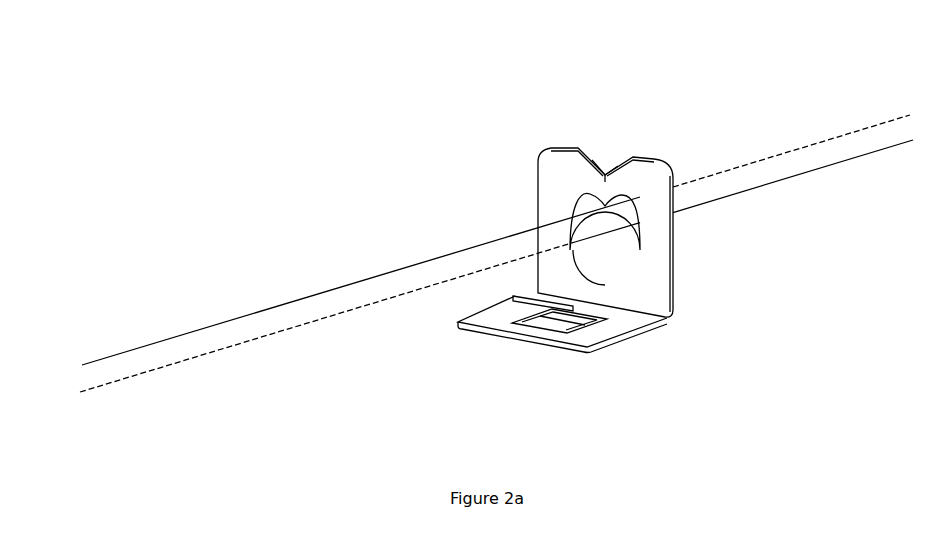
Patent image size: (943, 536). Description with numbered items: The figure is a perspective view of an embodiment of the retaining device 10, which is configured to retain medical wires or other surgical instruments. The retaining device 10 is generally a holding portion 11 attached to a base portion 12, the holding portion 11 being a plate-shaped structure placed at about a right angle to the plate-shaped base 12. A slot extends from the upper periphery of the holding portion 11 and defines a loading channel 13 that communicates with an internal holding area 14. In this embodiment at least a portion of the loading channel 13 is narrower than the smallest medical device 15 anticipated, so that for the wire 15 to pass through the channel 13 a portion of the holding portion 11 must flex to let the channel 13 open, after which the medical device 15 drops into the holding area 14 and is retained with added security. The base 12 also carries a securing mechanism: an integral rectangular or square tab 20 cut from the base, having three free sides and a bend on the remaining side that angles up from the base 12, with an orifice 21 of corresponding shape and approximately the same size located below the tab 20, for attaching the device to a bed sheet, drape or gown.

The retaining device 10 is at (566, 79).
The holding portion 11 is at (653, 227).
The base portion 12 is at (620, 325).
The loading channel 13 is at (605, 172).
The holding area 14 is at (602, 257).
The medical device 15 is at (750, 156).
The tab 20 is at (513, 300).
The orifice 21 is at (557, 323).